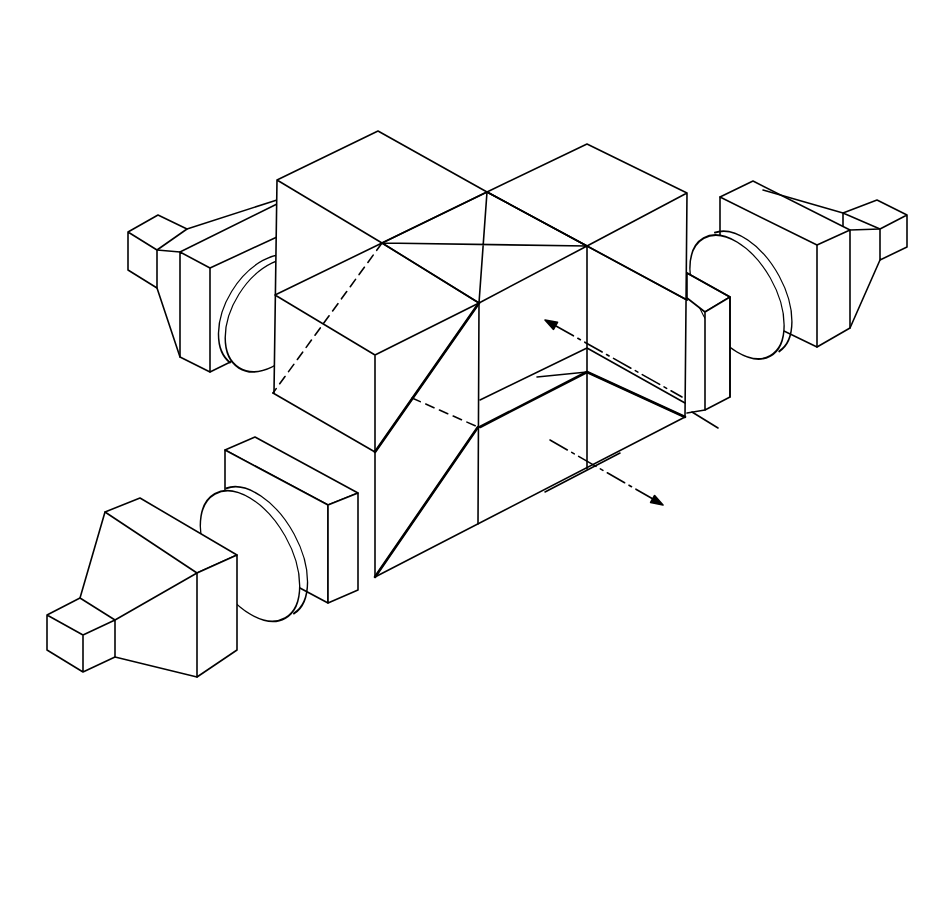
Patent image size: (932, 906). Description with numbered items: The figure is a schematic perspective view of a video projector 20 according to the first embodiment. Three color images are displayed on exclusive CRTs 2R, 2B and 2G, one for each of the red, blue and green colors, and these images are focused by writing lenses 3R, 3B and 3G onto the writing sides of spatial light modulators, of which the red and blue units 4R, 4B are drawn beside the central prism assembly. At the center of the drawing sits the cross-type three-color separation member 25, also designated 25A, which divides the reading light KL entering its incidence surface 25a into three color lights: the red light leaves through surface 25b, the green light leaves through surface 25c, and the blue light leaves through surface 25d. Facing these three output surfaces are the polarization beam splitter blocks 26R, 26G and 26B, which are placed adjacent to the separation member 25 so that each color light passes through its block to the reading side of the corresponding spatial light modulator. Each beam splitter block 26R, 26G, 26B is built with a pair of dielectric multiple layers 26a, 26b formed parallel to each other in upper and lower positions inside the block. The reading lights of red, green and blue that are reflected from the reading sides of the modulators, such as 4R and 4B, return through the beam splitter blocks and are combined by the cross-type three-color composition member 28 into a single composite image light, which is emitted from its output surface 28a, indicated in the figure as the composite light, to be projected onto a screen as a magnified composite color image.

The video projector 20 is at (100, 104).
The cross-type three-color separation member 25 is at (447, 218).
The separation member 25A is at (484, 309).
The surface of separation member 25a is at (572, 266).
The surface of separation member 25b is at (388, 252).
The surface of separation member 25c is at (442, 210).
The surface of separation member 25d is at (523, 208).
The polarization beam splitter block 26G is at (344, 143).
The polarization beam splitter block 26R is at (416, 556).
The polarization beam splitter block 26B is at (623, 443).
The dielectric multiple layer 26a is at (633, 267).
The dielectric multiple layer 26b is at (647, 401).
The cross-type three-color composition member 28 is at (546, 492).
The surface of composition member 28a is at (573, 478).
The CRT 2G is at (178, 358).
The CRT 2R is at (217, 662).
The CRT 2B is at (818, 346).
The writing lens 3G is at (245, 372).
The writing lens 3R is at (280, 607).
The writing lens 3B is at (758, 352).
The spatial light modulator 4R is at (343, 598).
The spatial light modulator 4B is at (730, 380).